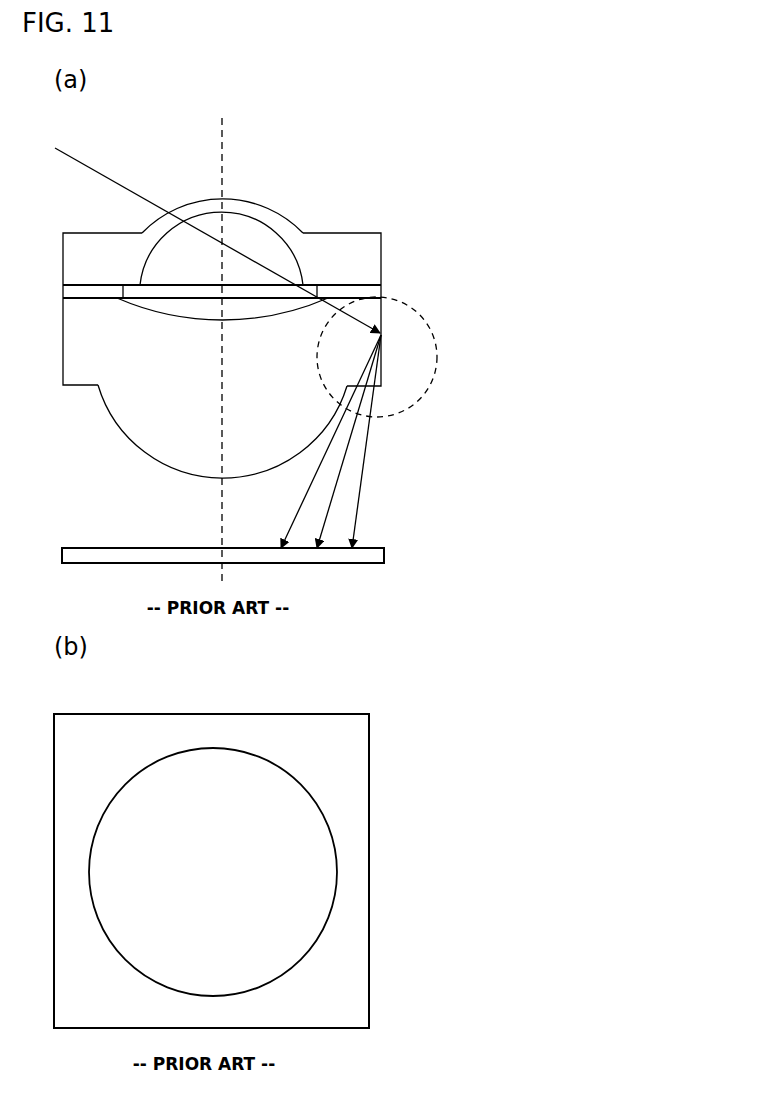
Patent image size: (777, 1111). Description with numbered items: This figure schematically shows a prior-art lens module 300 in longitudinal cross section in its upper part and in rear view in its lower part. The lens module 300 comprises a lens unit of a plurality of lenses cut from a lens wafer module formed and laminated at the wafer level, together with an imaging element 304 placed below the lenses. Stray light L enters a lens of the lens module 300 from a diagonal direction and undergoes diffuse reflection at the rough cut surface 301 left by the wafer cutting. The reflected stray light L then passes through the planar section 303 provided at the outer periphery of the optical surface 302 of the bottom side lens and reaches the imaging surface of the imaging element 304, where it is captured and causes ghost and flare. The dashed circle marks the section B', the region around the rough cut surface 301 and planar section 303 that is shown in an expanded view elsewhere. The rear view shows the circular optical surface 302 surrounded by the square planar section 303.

The lens module 300 is at (318, 176).
The rough cut surface 301 is at (383, 318).
The optical surface 302 is at (126, 446).
The planar section 303 is at (86, 392).
The imaging element 304 is at (98, 548).
The stray light L is at (102, 172).
The section B' is at (399, 357).